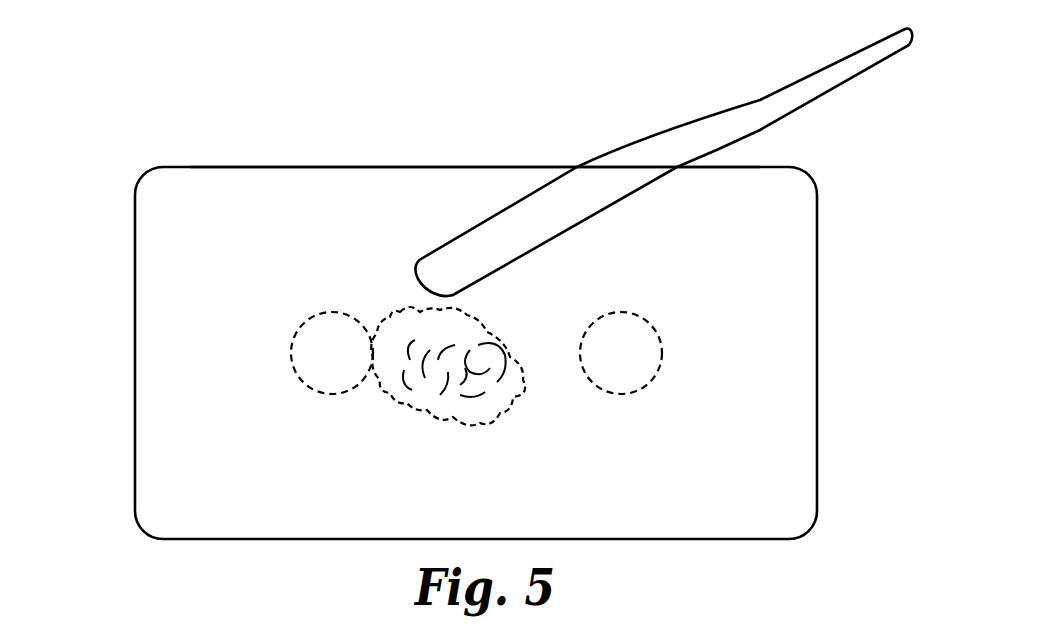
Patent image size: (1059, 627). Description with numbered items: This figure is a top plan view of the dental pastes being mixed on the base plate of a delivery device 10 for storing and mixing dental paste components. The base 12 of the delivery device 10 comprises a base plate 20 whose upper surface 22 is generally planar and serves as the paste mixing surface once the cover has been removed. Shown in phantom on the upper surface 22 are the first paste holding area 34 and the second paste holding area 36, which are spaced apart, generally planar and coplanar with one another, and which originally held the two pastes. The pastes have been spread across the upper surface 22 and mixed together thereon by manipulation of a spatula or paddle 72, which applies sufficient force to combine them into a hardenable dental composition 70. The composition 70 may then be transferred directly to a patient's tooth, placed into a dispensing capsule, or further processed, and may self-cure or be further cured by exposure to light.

The delivery device 10 is at (483, 68).
The base 12 is at (134, 217).
The base plate 20 is at (217, 175).
The upper surface 22 is at (197, 283).
The first paste holding area 34 is at (333, 312).
The second paste holding area 36 is at (622, 312).
The hardenable dental composition 70 is at (498, 413).
The spatula or paddle 72 is at (623, 160).